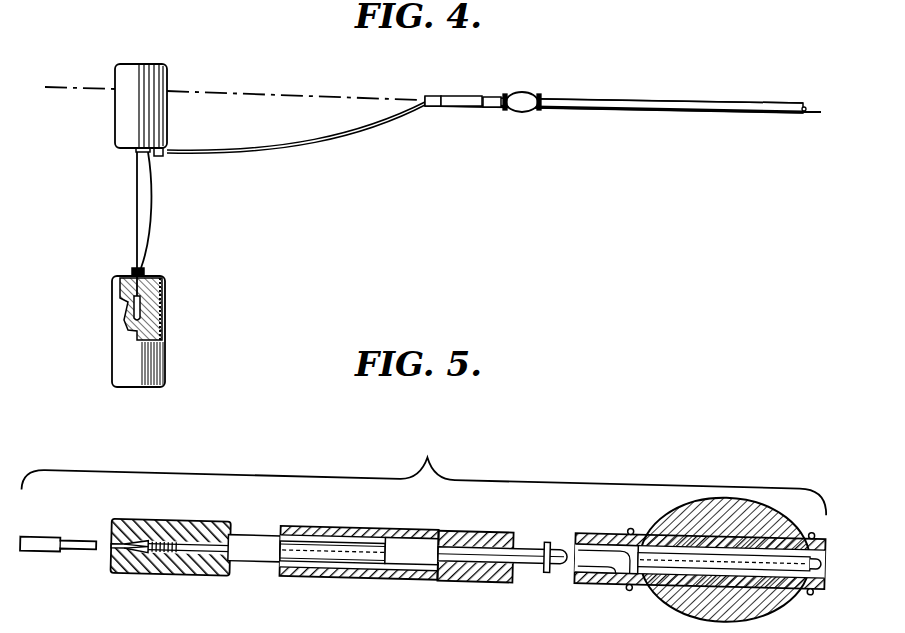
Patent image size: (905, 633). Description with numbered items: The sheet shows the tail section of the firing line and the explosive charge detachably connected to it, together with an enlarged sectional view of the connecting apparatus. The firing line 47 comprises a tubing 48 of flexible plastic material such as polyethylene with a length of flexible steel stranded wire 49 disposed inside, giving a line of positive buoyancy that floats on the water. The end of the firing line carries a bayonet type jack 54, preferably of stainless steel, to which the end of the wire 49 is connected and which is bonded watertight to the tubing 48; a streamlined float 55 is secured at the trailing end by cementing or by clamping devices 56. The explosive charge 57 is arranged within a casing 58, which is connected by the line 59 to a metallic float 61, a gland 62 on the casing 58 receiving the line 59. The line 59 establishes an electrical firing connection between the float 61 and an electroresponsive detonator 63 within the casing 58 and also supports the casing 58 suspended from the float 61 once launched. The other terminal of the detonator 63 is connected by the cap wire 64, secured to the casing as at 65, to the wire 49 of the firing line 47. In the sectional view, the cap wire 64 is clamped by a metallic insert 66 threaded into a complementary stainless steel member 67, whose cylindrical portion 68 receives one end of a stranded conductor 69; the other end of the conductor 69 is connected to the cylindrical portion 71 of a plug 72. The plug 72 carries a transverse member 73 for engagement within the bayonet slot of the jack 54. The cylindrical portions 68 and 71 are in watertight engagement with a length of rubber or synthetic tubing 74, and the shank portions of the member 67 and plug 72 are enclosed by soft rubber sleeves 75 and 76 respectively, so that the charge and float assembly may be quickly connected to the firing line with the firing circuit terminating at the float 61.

In FIG. 4, the firing line 47 is at (613, 112).
In FIG. 4, the tubing 48 is at (720, 114).
In FIG. 5, the tubing 48 is at (617, 520).
In FIG. 4, the stranded wire 49 is at (812, 115).
In FIG. 5, the stranded wire 49 is at (778, 557).
In FIG. 5, the bayonet type jack 54 is at (595, 533).
In FIG. 4, the streamlined float 55 is at (524, 99).
In FIG. 5, the streamlined float 55 is at (700, 597).
In FIG. 4, the clamping devices 56 is at (505, 95).
In FIG. 5, the clamping devices 56 is at (811, 513).
In FIG. 4, the explosive charge 57 is at (165, 286).
In FIG. 4, the casing 58 is at (166, 320).
In FIG. 4, the line 59 is at (136, 207).
In FIG. 4, the metallic float 61 is at (126, 132).
In FIG. 4, the gland 62 is at (146, 269).
In FIG. 4, the electroresponsive detonator 63 is at (133, 308).
In FIG. 4, the cap wire 64 is at (152, 217).
In FIG. 5, the cap wire 64 is at (50, 552).
In FIG. 4, the securing point 65 is at (159, 157).
In FIG. 5, the metallic insert 66 is at (113, 564).
In FIG. 5, the complementary member 67 is at (198, 571).
In FIG. 5, the cylindrical portion 68 is at (268, 535).
In FIG. 5, the stranded conductor 69 is at (367, 533).
In FIG. 5, the cylindrical portion 71 is at (420, 528).
In FIG. 5, the plug 72 is at (520, 534).
In FIG. 5, the transverse member 73 is at (547, 560).
In FIG. 4, the tubing 74 is at (466, 107).
In FIG. 5, the tubing 74 is at (325, 520).
In FIG. 4, the sleeve 75 is at (440, 107).
In FIG. 5, the sleeve 75 is at (195, 516).
In FIG. 4, the sleeve 76 is at (489, 108).
In FIG. 5, the sleeve 76 is at (490, 518).